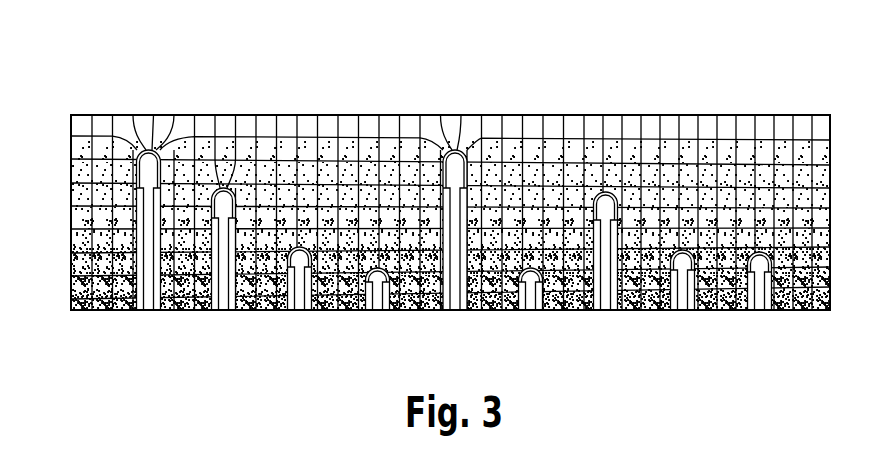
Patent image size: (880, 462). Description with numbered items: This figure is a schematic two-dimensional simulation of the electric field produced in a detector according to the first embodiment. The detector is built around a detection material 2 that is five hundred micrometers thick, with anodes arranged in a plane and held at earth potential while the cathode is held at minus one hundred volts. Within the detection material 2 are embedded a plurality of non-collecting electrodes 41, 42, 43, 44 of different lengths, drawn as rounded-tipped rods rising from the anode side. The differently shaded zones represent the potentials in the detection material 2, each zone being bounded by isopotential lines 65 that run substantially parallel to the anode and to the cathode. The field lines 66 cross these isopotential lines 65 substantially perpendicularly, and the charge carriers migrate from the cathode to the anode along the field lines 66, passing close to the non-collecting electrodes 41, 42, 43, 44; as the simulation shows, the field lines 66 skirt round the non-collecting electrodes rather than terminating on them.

The detection material 2 is at (670, 115).
The non-collecting electrode 41 is at (447, 300).
The non-collecting electrode 42 is at (598, 300).
The non-collecting electrode 43 is at (675, 300).
The non-collecting electrode 44 is at (370, 300).
The isopotential lines 65 is at (76, 258).
The field lines 66 is at (205, 258).